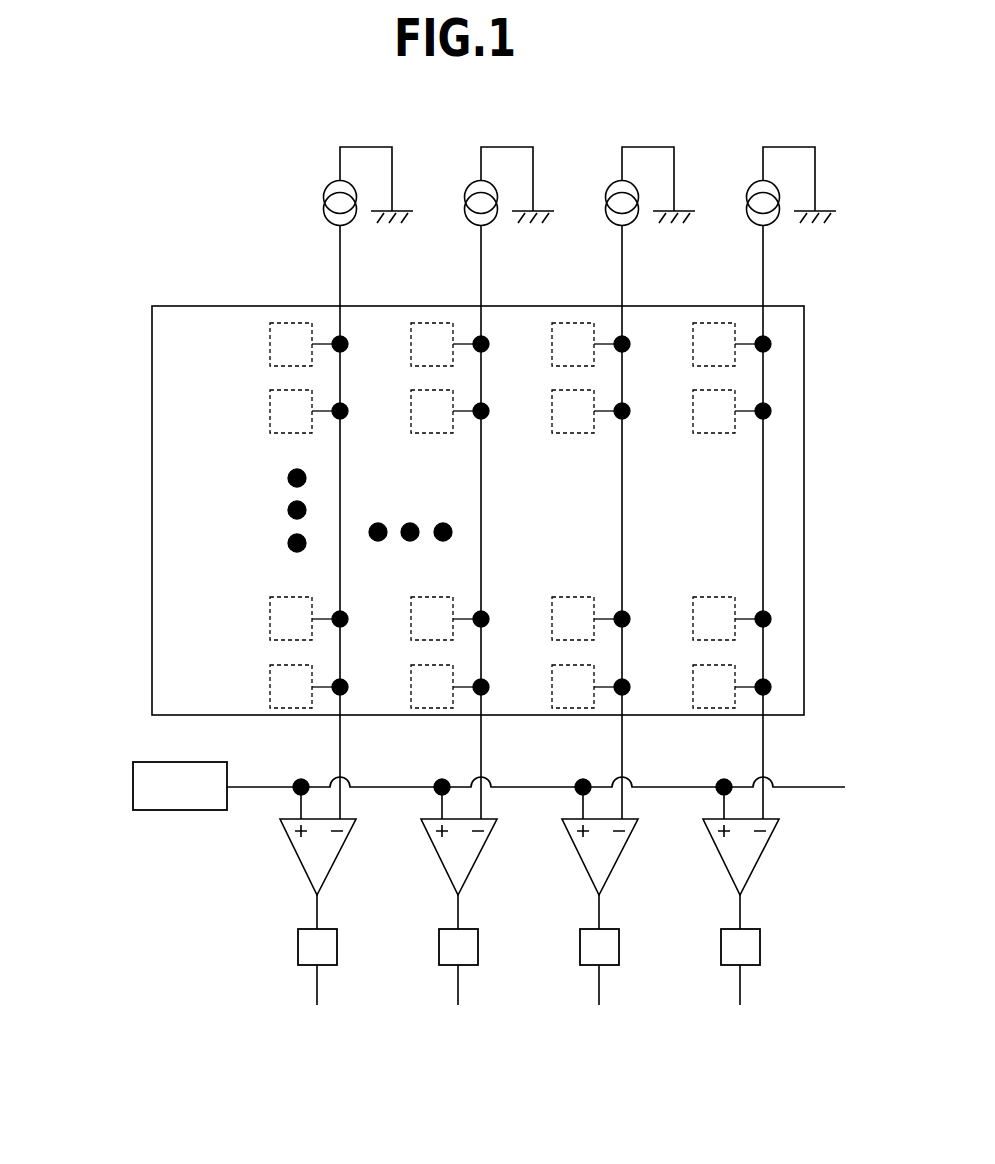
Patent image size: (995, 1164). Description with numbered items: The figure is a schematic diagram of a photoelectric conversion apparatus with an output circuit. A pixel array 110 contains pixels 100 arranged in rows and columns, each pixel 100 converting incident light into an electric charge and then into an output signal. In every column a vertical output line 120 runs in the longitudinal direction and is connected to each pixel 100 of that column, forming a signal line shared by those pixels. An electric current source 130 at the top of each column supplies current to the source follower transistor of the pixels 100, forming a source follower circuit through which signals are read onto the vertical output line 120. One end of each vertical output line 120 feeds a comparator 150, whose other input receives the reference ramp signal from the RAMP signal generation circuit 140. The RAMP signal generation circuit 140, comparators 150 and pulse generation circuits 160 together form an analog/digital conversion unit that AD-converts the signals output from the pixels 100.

The pixel 100 is at (269, 343).
The pixel array 110 is at (151, 528).
The vertical output line 120 is at (338, 746).
The electric current source 130 is at (322, 212).
The RAMP signal generation circuit 140 is at (133, 788).
The comparator 150 is at (298, 858).
The pulse generation circuit 160 is at (298, 950).